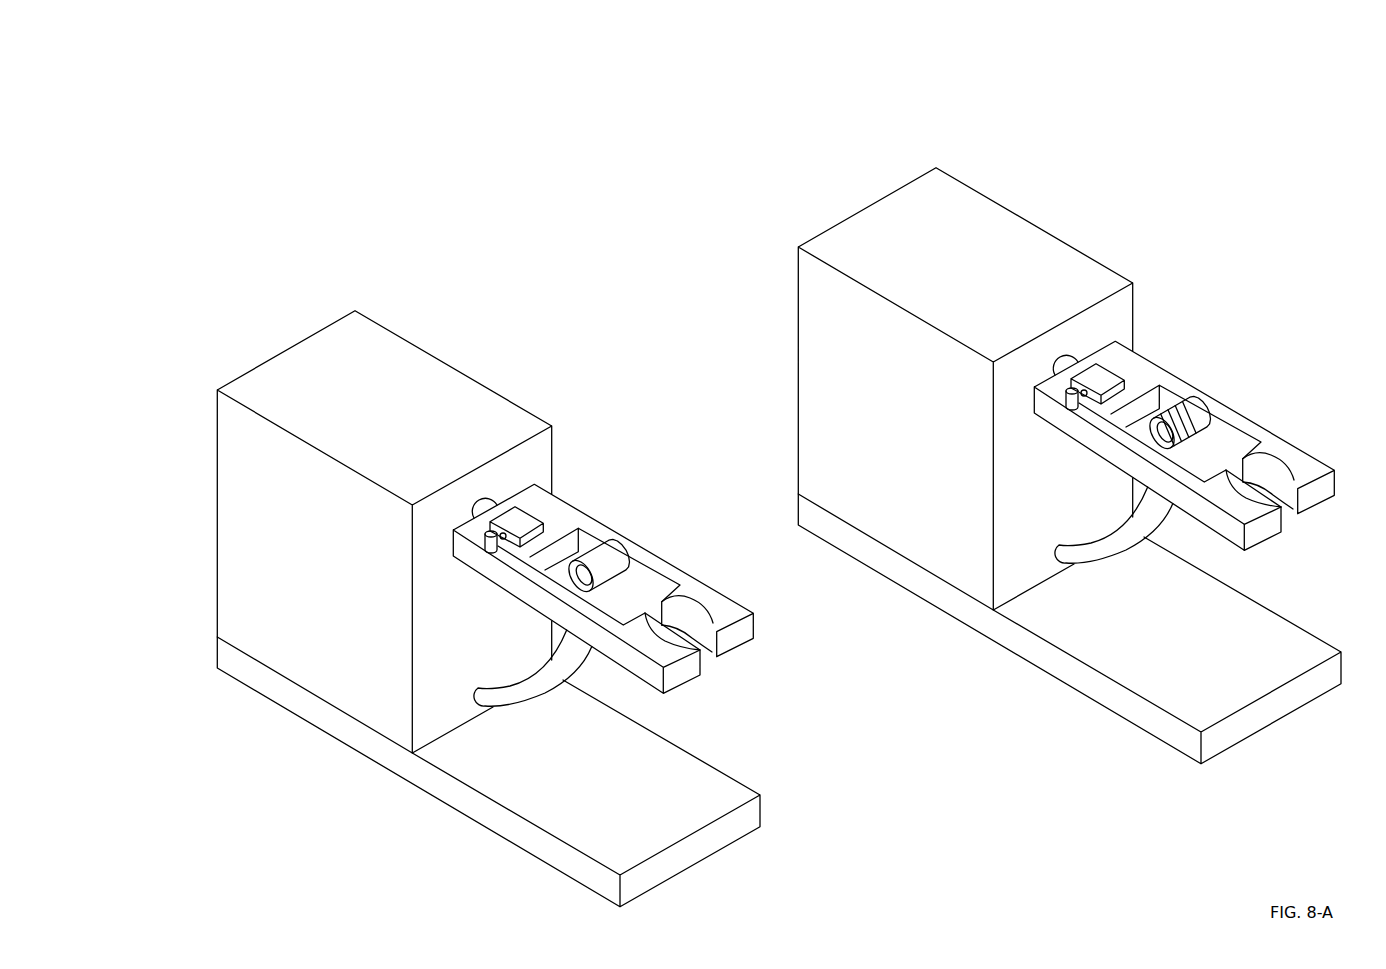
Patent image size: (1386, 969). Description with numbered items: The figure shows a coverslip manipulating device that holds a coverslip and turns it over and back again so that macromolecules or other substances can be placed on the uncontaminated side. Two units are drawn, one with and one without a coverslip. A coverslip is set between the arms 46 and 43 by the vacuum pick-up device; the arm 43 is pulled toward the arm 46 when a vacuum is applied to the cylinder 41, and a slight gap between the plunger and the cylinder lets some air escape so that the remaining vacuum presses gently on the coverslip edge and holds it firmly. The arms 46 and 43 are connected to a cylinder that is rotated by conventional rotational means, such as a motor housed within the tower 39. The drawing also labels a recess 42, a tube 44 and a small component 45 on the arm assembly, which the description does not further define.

The tower 39 is at (863, 203).
The cylinder 41 is at (1162, 413).
The cylindrical recess 42 is at (1273, 466).
The arm 43 is at (1212, 517).
The tube 44 is at (1053, 559).
The sensor 45 is at (1165, 415).
The arm 46 is at (1317, 507).